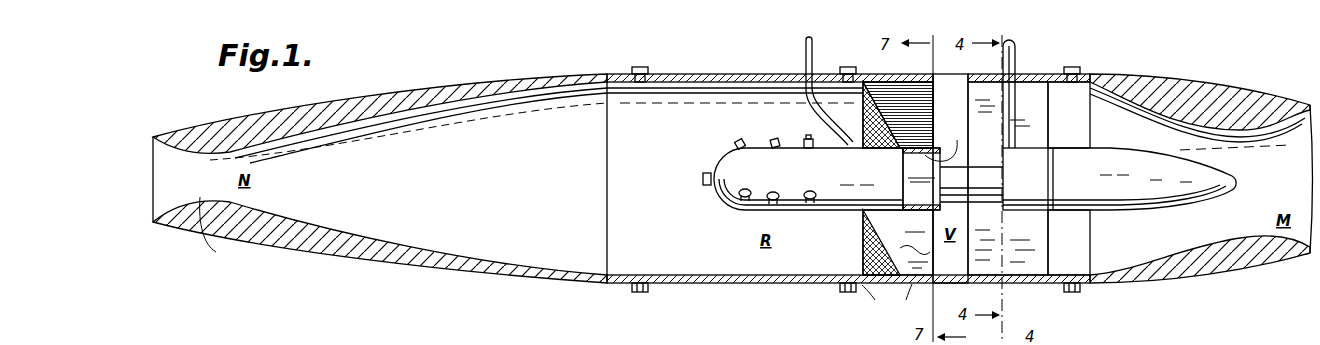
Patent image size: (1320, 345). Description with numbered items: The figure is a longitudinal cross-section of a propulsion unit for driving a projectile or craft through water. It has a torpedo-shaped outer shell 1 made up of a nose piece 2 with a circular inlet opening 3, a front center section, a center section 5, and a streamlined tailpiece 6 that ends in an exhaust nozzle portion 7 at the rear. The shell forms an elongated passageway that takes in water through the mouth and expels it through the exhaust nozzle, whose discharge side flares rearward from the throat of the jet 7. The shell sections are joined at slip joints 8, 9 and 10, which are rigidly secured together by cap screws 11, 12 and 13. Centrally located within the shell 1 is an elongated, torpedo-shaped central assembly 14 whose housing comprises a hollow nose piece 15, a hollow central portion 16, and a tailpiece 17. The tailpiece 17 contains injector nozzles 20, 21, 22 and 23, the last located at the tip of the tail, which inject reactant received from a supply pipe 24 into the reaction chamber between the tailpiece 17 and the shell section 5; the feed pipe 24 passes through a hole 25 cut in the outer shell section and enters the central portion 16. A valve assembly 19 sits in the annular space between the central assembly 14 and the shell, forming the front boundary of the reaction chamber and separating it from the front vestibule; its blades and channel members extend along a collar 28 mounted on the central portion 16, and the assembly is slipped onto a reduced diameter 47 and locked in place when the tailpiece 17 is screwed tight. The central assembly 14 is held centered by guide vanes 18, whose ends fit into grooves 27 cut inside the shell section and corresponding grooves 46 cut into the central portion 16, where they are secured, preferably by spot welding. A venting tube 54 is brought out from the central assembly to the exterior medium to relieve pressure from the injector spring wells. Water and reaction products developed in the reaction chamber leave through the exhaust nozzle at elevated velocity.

The outer shell 1 is at (911, 299).
The nose piece 2 is at (1168, 283).
The circular opening 3 is at (1288, 157).
The center section 5 is at (758, 283).
The streamlined tailpiece 6 is at (418, 275).
The exhaust nozzle portion 7 is at (213, 231).
The slip joint 8 is at (1086, 290).
The slip joint 9 is at (874, 299).
The slip joint 10 is at (627, 283).
The cap screw 11 is at (1074, 293).
The cap screw 12 is at (846, 292).
The cap screw 13 is at (644, 292).
The central member or assembly 14 is at (1242, 185).
The nose piece 15 is at (1178, 210).
The central portion 16 is at (1028, 200).
The tailpiece 17 is at (848, 210).
The guide vanes 18 is at (1058, 248).
The valve assembly 19 is at (863, 258).
The injector nozzle 20 is at (810, 136).
The injector nozzle 21 is at (775, 139).
The injector nozzle 22 is at (738, 141).
The injector valve 23 is at (703, 178).
The supply pipe 24 is at (1018, 53).
The hole 25 is at (1018, 80).
The grooves 27 is at (1022, 330).
The collar 28 is at (942, 141).
The grooves 46 is at (1040, 150).
The reduced diameter 47 is at (921, 179).
The venting tube 54 is at (806, 53).